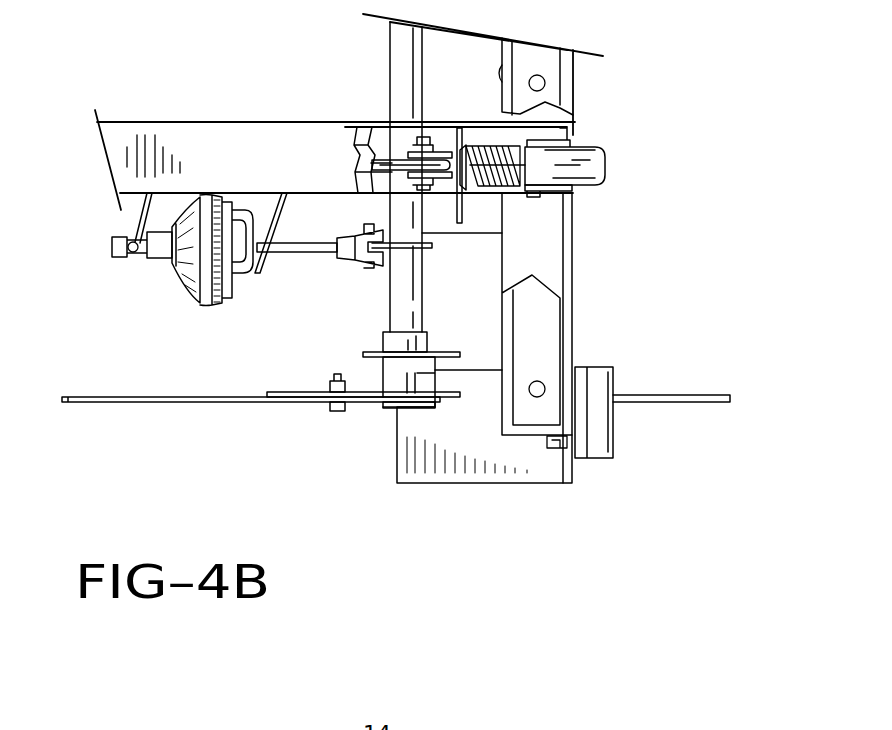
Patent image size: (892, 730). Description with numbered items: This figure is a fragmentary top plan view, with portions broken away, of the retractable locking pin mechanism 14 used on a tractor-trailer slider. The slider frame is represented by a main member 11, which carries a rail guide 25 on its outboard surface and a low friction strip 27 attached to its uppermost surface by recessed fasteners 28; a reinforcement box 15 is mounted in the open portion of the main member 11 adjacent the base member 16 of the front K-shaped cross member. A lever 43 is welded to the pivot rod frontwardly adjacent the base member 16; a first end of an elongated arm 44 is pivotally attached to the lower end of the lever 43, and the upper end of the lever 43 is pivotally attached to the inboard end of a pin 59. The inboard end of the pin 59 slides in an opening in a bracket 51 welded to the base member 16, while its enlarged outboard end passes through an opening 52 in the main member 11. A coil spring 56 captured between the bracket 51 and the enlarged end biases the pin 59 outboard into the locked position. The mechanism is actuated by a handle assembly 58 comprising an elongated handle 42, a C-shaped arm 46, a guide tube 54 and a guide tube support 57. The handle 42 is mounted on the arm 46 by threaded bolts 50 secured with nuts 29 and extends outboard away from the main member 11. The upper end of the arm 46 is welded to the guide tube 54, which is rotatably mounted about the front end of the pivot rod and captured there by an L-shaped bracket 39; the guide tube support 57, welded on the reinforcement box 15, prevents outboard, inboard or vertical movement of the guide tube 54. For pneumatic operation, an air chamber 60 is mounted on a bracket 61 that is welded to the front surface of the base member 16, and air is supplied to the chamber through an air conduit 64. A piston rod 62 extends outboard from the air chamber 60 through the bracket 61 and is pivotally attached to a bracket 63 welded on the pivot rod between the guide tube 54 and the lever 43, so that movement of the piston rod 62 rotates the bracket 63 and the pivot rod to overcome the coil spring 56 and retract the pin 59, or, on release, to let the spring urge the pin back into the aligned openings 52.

The main member 11 is at (538, 483).
The retractable locking pin mechanism 14 is at (393, 303).
The reinforcement box 15 is at (463, 300).
The base member 16 is at (118, 132).
The rail guide 25 is at (600, 438).
The low friction strip 27 is at (548, 331).
The recessed fastener 28 is at (539, 385).
The nut 29 is at (333, 384).
The L-shaped bracket 39 is at (384, 408).
The handle 42 is at (710, 398).
The lever 43 is at (400, 164).
The elongated arm 44 is at (371, 171).
The C-shaped arm 46 is at (281, 393).
The threaded bolt 50 is at (334, 410).
The bracket 51 is at (460, 215).
The opening 52 is at (570, 189).
The guide tube 54 is at (414, 378).
The coil spring 56 is at (490, 150).
The guide tube support 57 is at (456, 357).
The handle assembly 58 is at (289, 403).
The pin 59 is at (605, 163).
The air chamber 60 is at (188, 278).
The bracket 61 is at (264, 200).
The piston rod 62 is at (281, 250).
The bracket 63 is at (432, 247).
The air conduit 64 is at (140, 226).